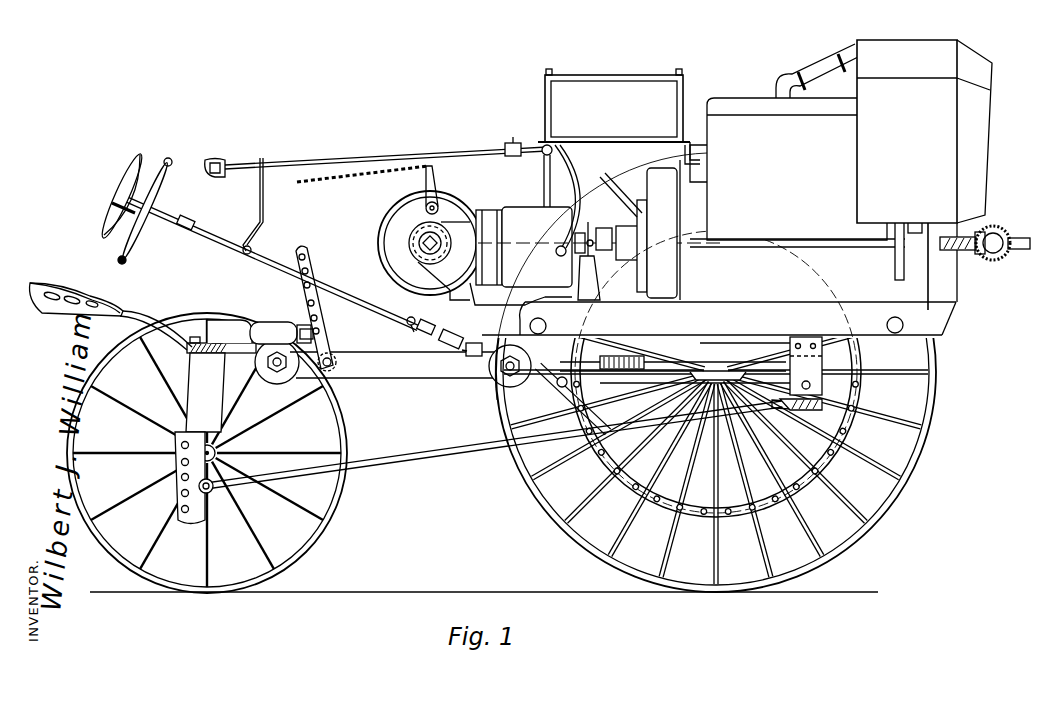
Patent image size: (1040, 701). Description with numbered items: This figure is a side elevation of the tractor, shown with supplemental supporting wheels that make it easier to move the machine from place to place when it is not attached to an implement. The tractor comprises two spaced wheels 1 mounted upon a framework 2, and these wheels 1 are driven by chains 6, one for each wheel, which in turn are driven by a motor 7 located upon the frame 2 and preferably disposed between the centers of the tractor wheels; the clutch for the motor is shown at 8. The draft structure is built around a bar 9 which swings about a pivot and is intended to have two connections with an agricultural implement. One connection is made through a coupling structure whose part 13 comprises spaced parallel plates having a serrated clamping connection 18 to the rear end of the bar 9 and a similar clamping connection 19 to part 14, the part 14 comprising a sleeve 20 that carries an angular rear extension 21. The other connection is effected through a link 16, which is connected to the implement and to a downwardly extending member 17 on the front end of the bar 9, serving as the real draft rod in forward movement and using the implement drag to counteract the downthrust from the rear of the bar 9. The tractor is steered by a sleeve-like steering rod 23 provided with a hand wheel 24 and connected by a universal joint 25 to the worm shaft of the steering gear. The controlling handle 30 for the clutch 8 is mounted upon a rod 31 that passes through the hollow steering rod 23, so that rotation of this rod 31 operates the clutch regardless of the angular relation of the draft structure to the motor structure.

The wheels 1 is at (924, 460).
The framework 2 is at (912, 315).
The chains 6 is at (900, 490).
The motor 7 is at (767, 122).
The clutch 8 is at (583, 248).
The bar 9 is at (557, 369).
The coupling part 13 is at (466, 370).
The coupling part 14 is at (263, 322).
The link 16 is at (421, 455).
The downwardly extending member 17 is at (822, 378).
The serrated clamping connection 18 is at (503, 376).
The clamping connection 19 is at (268, 375).
The sleeve 20 is at (268, 334).
The angular rear extension 21 is at (238, 321).
The steering rod 23 is at (200, 228).
The hand wheel 24 is at (172, 157).
The universal joint 25 is at (452, 354).
The controlling handle 30 is at (138, 154).
The rod 31 is at (184, 228).